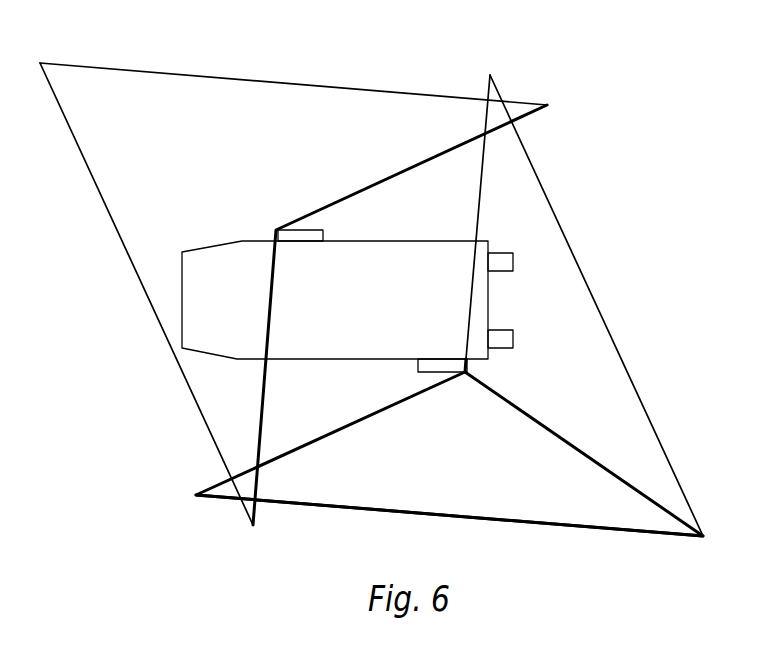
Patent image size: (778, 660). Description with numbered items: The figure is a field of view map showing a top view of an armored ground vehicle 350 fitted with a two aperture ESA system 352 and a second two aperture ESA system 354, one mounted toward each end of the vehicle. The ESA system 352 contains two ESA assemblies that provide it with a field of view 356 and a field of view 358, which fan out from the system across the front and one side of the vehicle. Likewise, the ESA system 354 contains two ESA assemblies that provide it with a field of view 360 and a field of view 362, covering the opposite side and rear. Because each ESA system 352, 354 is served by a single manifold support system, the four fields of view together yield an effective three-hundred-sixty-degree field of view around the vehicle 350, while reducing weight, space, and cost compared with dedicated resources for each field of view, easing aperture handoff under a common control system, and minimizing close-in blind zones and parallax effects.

The armored ground vehicle 350 is at (408, 241).
The two aperture ESA system 352 is at (310, 227).
The two aperture ESA system 354 is at (437, 373).
The field of view 356 is at (180, 95).
The field of view 358 is at (133, 218).
The field of view 360 is at (617, 400).
The field of view 362 is at (482, 506).